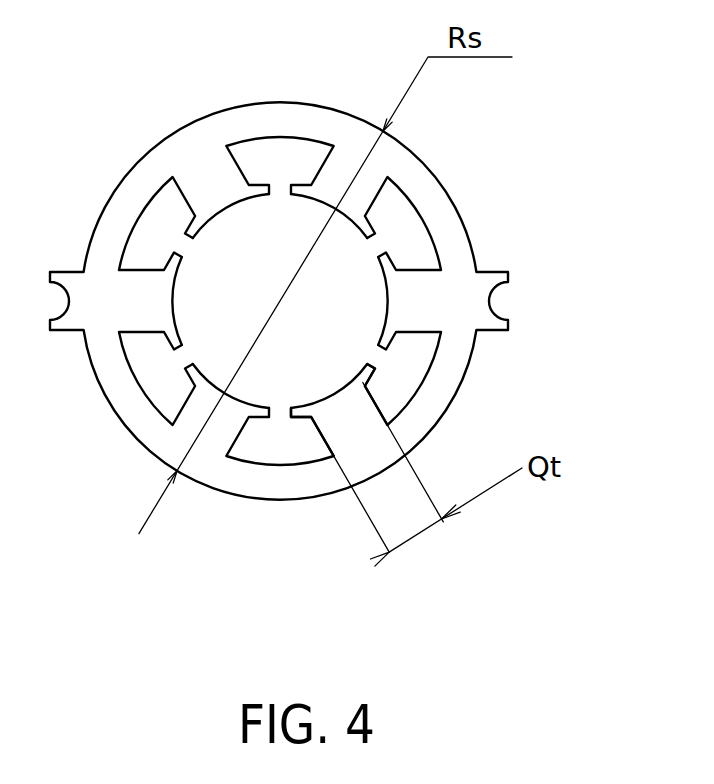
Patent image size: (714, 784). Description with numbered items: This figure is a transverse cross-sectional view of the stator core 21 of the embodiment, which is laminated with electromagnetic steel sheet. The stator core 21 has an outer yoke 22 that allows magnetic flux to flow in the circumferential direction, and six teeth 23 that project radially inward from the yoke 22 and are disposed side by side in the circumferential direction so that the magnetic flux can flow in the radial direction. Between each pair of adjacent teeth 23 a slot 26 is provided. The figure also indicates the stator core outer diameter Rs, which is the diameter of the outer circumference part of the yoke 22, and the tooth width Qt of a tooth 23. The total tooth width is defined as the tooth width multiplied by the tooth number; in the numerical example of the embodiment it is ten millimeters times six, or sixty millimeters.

The stator core 21 is at (325, 341).
The yoke 22 is at (433, 208).
The teeth 23 is at (333, 435).
The slot 26 is at (418, 253).